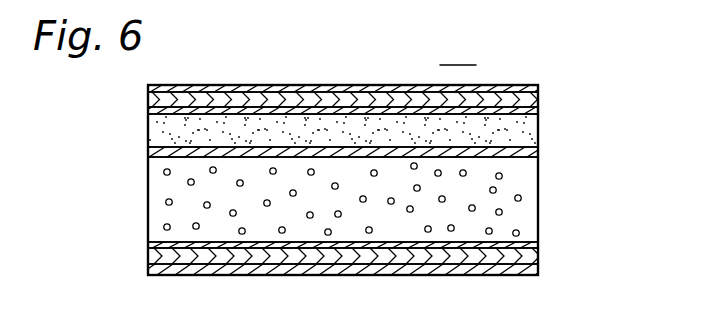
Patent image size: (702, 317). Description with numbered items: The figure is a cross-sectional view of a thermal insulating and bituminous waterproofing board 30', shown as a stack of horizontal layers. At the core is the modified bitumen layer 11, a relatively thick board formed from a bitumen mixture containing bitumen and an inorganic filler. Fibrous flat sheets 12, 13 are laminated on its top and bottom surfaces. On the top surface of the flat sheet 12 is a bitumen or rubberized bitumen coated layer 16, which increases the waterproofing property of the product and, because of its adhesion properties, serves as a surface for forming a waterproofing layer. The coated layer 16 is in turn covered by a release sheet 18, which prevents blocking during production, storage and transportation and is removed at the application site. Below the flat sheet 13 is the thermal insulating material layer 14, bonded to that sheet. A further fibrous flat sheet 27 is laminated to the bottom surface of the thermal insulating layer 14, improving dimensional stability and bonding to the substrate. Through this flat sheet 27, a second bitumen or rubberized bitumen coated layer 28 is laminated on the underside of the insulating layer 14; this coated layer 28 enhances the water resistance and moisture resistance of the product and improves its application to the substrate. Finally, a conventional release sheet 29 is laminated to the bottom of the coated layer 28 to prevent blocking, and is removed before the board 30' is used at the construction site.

The thermal insulating and bituminous waterproofing board 30' is at (343, 156).
The release sheet 18 is at (150, 87).
The bitumen or rubberized bitumen coated layer 16 is at (152, 100).
The flat sheet 12 is at (536, 110).
The modified bitumen layer 11 is at (538, 133).
The flat sheet 13 is at (534, 152).
The thermal insulating material layer 14 is at (530, 207).
The flat sheet 27 is at (538, 245).
The bitumen or rubberized bitumen coated layer 28 is at (150, 257).
The release sheet 29 is at (150, 266).